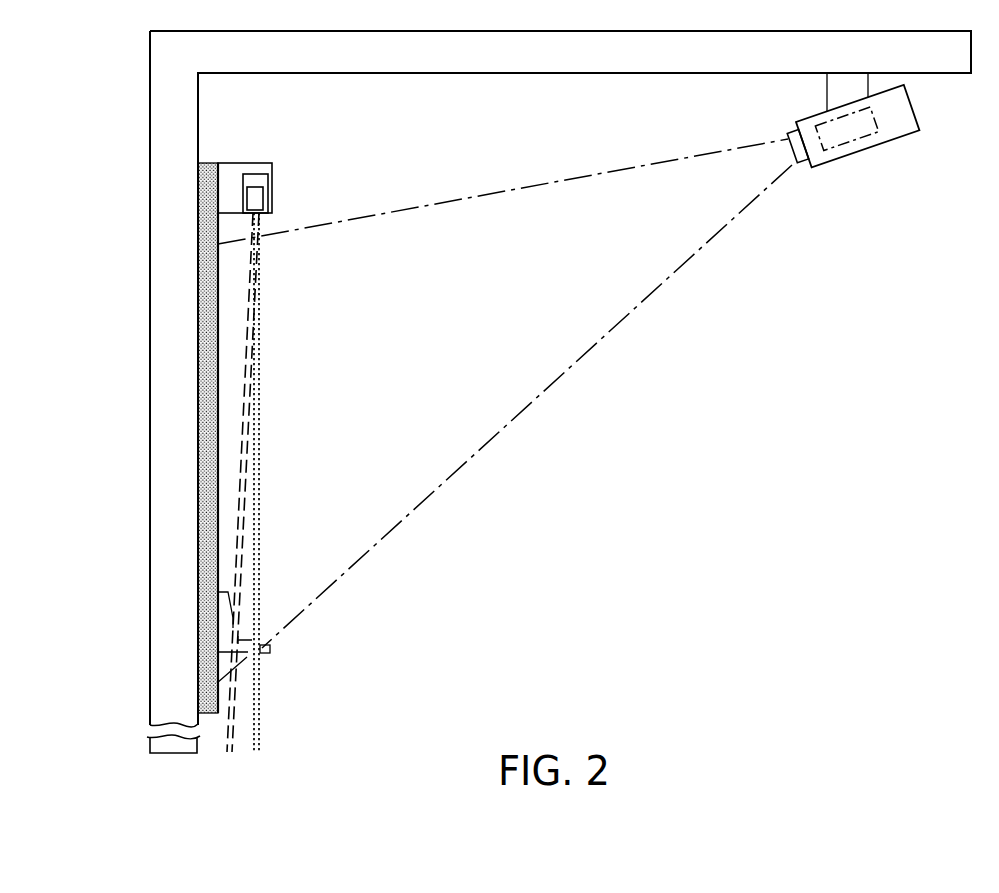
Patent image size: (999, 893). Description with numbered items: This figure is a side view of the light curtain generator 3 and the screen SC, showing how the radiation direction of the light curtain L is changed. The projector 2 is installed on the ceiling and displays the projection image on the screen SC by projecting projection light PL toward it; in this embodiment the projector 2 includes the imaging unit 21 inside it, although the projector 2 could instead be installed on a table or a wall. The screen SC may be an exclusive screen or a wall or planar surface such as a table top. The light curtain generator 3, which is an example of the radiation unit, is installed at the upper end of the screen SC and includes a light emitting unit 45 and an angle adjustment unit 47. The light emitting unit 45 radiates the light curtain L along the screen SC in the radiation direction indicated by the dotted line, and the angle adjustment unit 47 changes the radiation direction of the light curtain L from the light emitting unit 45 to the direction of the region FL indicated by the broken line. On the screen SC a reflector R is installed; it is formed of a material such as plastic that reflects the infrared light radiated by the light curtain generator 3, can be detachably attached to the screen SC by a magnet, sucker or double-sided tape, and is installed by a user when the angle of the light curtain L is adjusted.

The projector 2 is at (917, 108).
The imaging unit 21 is at (882, 122).
The light curtain generator 3 is at (225, 183).
The light emitting unit 45 is at (272, 180).
The angle adjustment unit 47 is at (262, 197).
The screen SC is at (208, 278).
The region FL is at (240, 500).
The light curtain L is at (260, 490).
The projection light PL is at (540, 183).
The reflector R is at (270, 649).